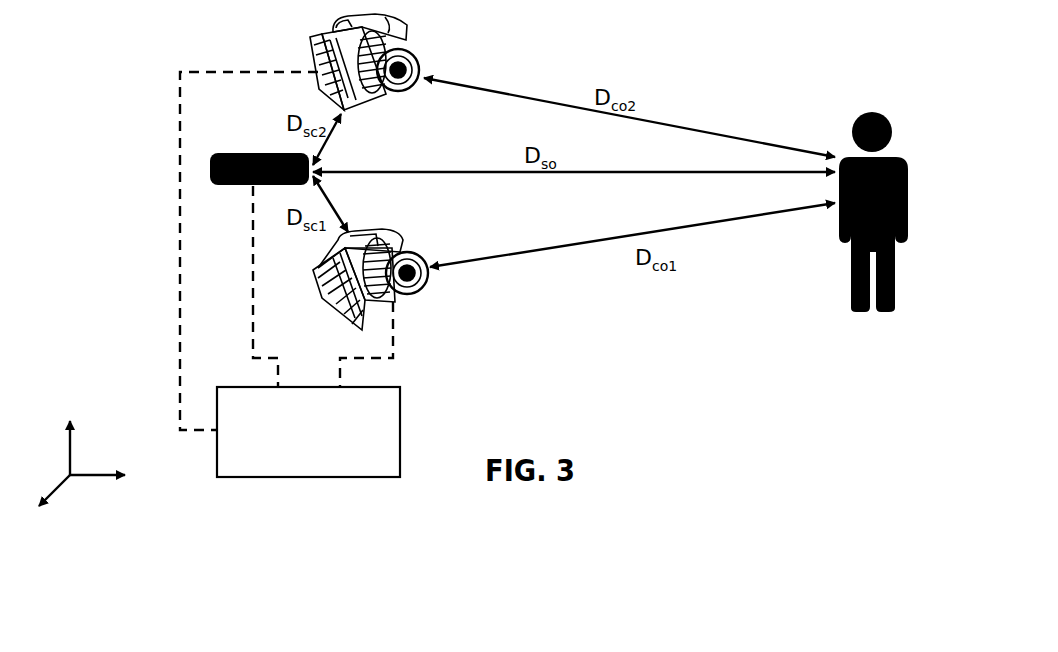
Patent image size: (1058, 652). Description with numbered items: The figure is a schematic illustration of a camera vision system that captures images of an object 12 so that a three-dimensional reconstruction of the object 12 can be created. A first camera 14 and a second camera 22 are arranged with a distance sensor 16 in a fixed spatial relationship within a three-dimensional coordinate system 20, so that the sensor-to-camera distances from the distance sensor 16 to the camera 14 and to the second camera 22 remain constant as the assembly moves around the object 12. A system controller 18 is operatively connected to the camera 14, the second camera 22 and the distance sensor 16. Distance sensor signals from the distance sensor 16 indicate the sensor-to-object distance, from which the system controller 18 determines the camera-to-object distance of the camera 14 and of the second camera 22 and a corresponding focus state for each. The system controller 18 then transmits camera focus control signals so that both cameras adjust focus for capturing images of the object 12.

The object 12 is at (903, 161).
The camera 14 is at (416, 258).
The distance sensor 16 is at (249, 154).
The system controller 18 is at (400, 421).
The three-dimensional coordinate system 20 is at (73, 447).
The second camera 22 is at (407, 36).